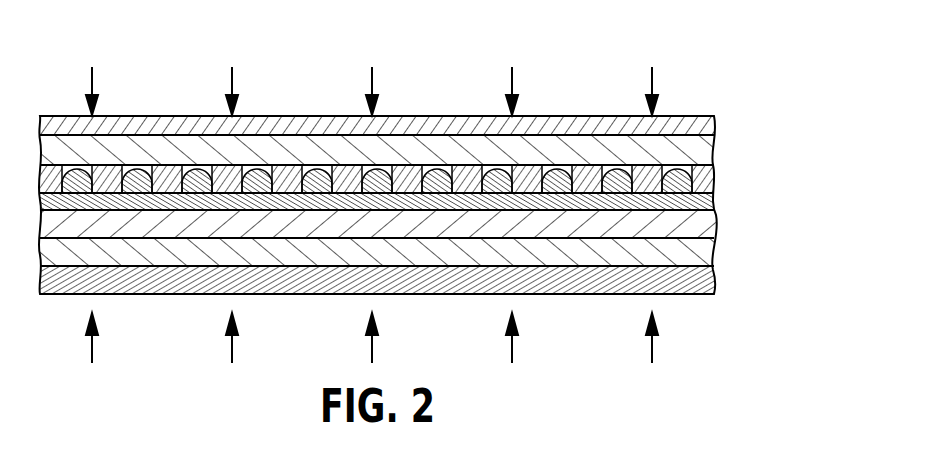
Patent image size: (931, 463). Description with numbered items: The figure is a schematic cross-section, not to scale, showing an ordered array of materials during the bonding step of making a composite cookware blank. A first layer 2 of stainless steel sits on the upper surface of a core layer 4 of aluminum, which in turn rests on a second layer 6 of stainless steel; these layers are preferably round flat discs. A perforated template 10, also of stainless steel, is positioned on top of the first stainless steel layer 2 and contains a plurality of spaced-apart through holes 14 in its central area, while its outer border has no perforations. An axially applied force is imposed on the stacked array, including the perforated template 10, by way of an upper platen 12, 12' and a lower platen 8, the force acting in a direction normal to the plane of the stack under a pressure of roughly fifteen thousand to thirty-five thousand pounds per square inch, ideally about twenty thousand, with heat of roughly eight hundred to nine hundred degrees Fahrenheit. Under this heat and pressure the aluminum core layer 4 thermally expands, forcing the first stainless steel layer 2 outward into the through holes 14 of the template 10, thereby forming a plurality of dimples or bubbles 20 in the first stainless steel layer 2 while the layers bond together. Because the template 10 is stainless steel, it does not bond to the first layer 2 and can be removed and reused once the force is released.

The first layer of stainless steel material 2 is at (712, 197).
The core layer of aluminum material 4 is at (700, 228).
The second layer of stainless steel material 6 is at (698, 252).
The lower platen 8 is at (695, 281).
The perforated template 10 is at (712, 180).
The upper platen 12 is at (420, 145).
The upper platen 12' is at (416, 115).
The through holes 14 is at (273, 172).
The bubbles 20 is at (74, 172).